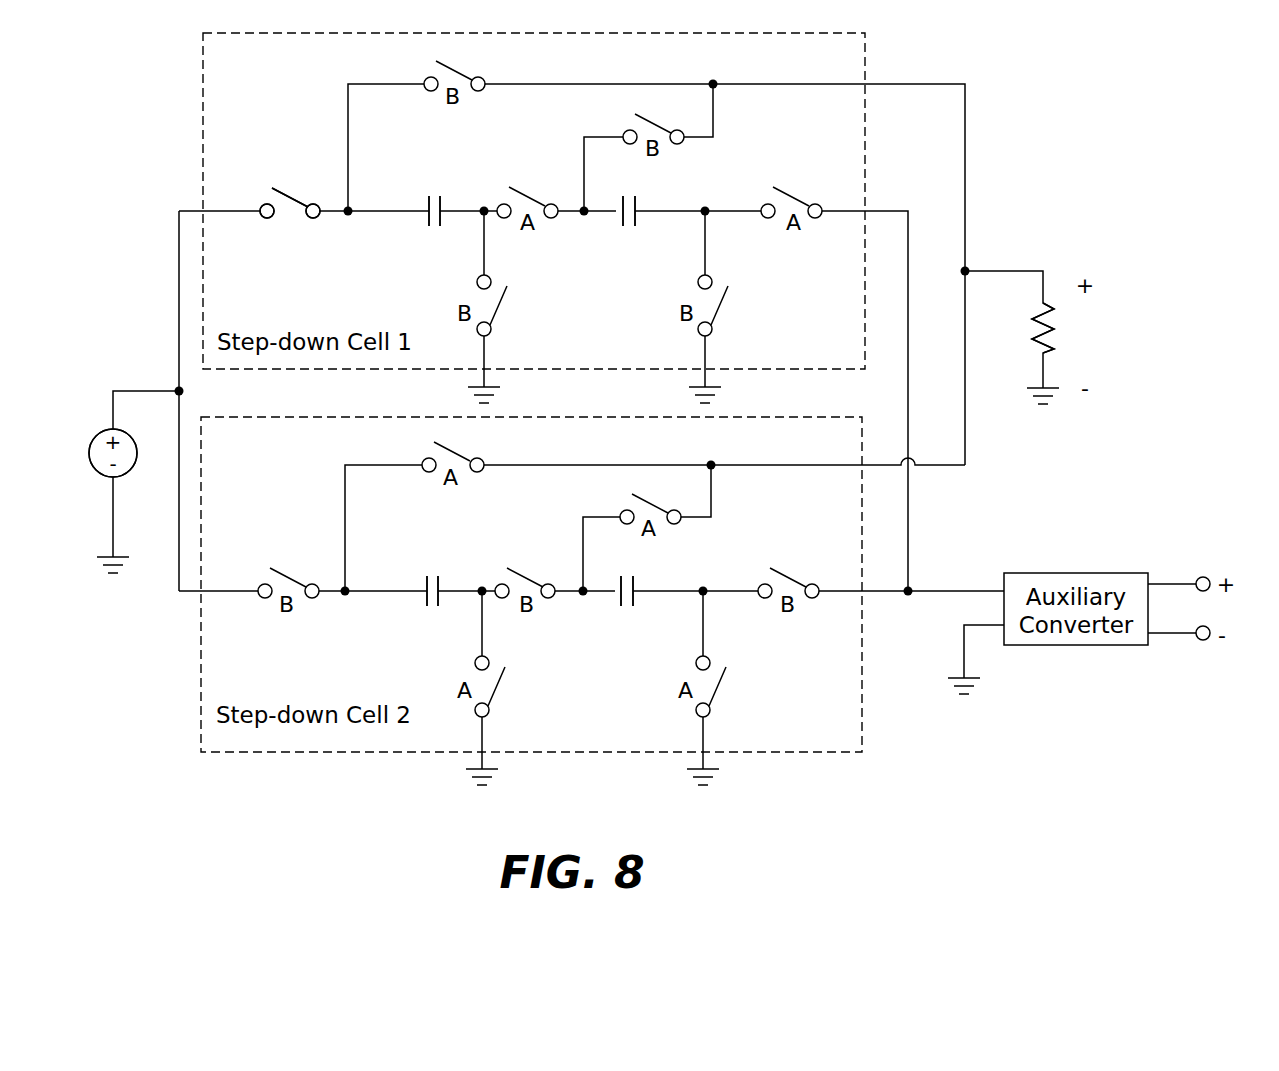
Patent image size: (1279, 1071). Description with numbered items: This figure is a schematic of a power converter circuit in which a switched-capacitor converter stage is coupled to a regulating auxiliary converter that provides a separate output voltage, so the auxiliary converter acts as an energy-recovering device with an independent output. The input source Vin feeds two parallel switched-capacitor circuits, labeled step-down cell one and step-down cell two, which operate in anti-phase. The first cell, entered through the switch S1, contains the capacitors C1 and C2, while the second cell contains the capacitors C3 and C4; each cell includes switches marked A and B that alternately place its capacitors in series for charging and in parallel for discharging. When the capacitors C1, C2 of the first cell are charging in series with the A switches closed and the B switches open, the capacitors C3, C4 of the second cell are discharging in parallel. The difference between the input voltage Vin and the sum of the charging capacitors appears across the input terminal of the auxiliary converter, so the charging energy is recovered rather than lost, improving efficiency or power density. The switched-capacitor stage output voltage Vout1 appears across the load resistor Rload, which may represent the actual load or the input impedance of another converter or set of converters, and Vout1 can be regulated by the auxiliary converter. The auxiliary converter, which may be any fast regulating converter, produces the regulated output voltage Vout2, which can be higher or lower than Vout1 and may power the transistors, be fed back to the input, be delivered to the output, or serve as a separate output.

The input switch S1 is at (290, 193).
The capacitor C1 is at (433, 196).
The capacitor C2 is at (623, 227).
The capacitor C3 is at (427, 576).
The capacitor C4 is at (622, 607).
The input voltage Vin is at (94, 453).
The load resistor Rload is at (1012, 328).
The output voltage of the switched-capacitor stage Vout1 is at (1085, 334).
The regulated output voltage Vout2 is at (1244, 616).